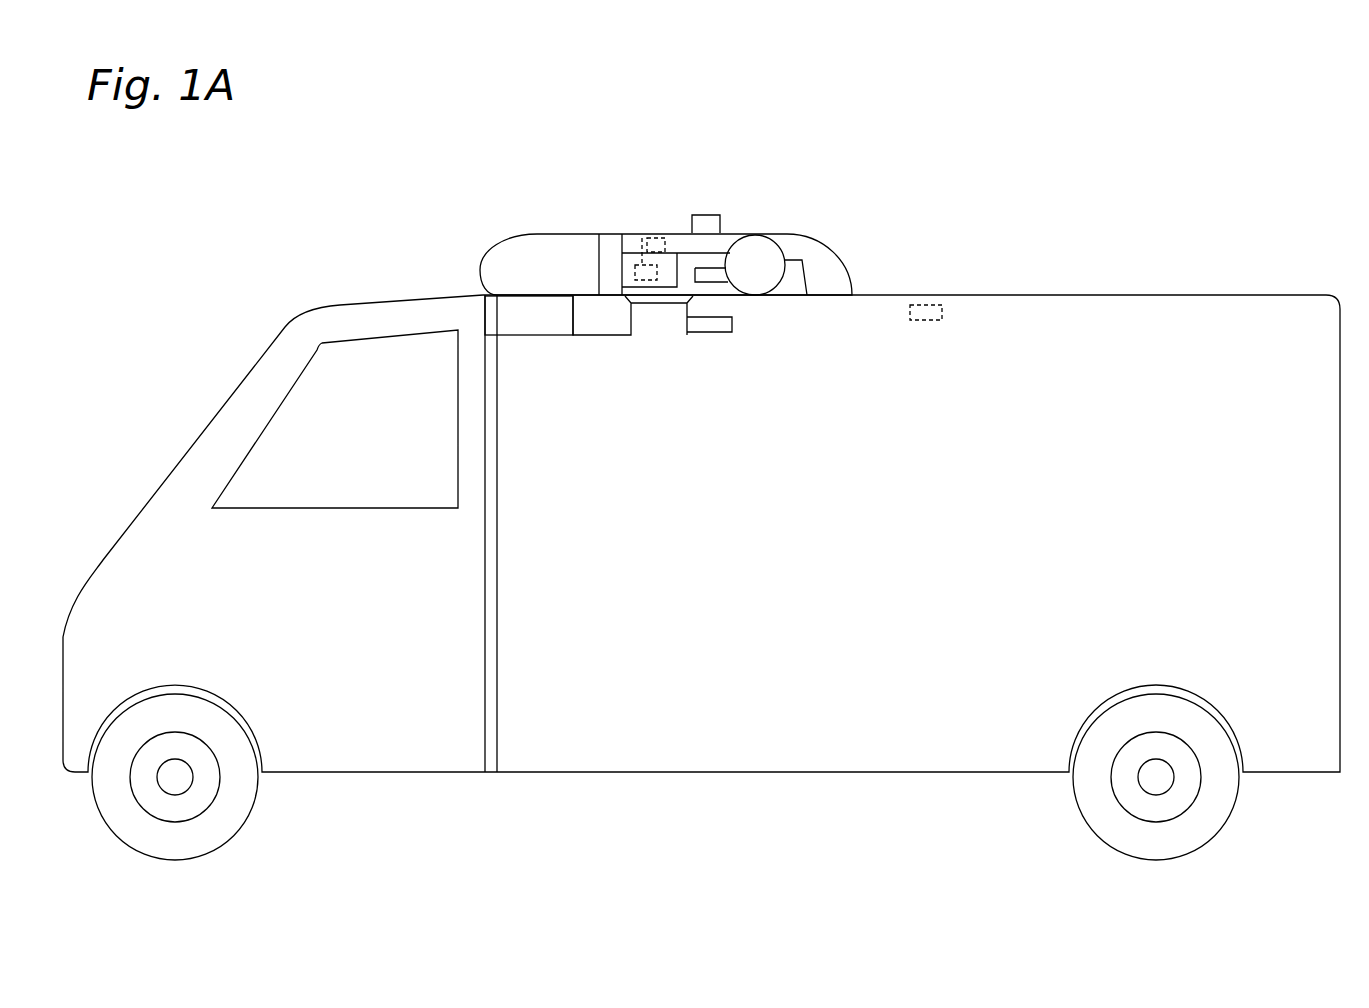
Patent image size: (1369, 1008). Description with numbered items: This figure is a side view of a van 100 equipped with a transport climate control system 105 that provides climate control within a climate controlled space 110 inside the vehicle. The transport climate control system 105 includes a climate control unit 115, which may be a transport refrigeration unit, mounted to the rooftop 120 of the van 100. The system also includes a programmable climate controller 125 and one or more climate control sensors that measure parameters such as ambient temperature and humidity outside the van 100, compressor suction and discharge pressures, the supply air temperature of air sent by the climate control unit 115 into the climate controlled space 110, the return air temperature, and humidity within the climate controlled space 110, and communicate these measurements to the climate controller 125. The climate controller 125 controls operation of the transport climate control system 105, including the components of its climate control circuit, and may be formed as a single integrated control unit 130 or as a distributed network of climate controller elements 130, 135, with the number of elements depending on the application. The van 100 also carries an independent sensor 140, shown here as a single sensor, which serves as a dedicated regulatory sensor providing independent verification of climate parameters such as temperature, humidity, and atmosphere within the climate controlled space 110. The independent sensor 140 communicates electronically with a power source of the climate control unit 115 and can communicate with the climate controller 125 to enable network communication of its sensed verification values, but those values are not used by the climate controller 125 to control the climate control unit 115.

The van 100 is at (246, 282).
The transport climate control system 105 is at (802, 188).
The climate controlled space 110 is at (1207, 330).
The climate control unit (CCU) 115 is at (828, 245).
The rooftop 120 is at (1073, 295).
The programmable climate controller 125 is at (632, 242).
The integrated control unit 130 is at (641, 238).
The climate controller element 135 is at (662, 235).
The independent sensor 140 is at (925, 303).